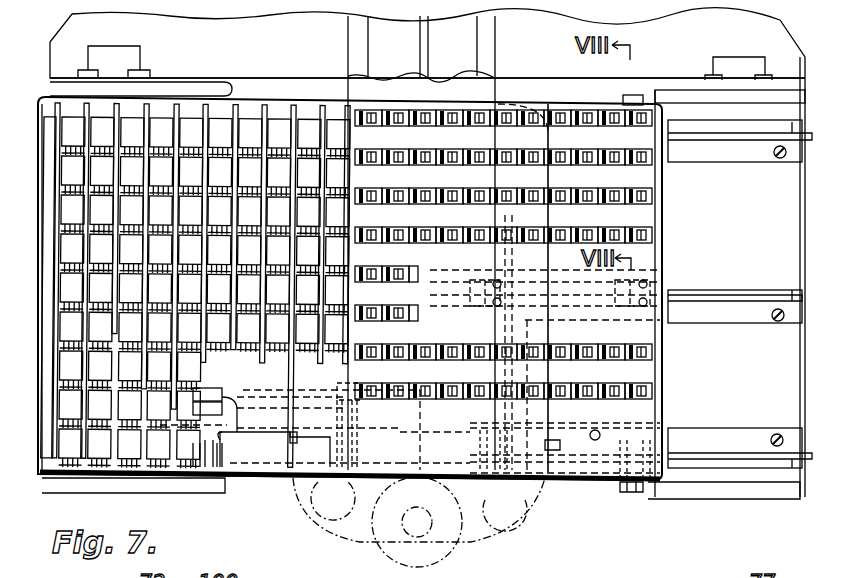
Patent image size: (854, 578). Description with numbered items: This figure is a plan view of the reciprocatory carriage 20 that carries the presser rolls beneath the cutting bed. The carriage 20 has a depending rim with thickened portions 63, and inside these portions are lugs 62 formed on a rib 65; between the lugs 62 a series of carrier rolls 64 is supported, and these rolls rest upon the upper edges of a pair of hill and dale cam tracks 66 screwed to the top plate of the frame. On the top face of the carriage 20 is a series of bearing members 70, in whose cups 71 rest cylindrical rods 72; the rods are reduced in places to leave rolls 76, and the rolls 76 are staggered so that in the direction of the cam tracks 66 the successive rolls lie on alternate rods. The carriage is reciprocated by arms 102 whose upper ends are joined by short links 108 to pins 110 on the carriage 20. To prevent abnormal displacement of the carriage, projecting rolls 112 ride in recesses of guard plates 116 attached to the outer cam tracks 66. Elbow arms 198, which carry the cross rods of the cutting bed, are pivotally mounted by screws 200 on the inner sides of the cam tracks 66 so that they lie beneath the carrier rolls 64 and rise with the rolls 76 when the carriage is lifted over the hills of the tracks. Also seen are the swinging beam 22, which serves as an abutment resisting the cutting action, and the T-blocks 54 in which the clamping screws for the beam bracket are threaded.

The reciprocatory carriage 20 is at (668, 365).
The swinging beam 22 is at (352, 50).
The T-blocks 54 is at (120, 62).
The lugs 62 is at (375, 440).
The thickened portions 63 is at (312, 492).
The carrier rolls 64 is at (505, 446).
The rib 65 is at (418, 420).
The cam tracks 66 is at (688, 123).
The bearing members 70 is at (414, 352).
The cups 71 is at (412, 149).
The cylindrical rods 72 is at (352, 228).
The rolls 76 is at (350, 262).
The arms 102 is at (208, 434).
The short links 108 is at (270, 400).
The pins 110 is at (368, 420).
The projecting rolls 112 is at (633, 98).
The guard plates 116 is at (197, 92).
The elbow arms 198 is at (748, 138).
The screws 200 is at (596, 430).